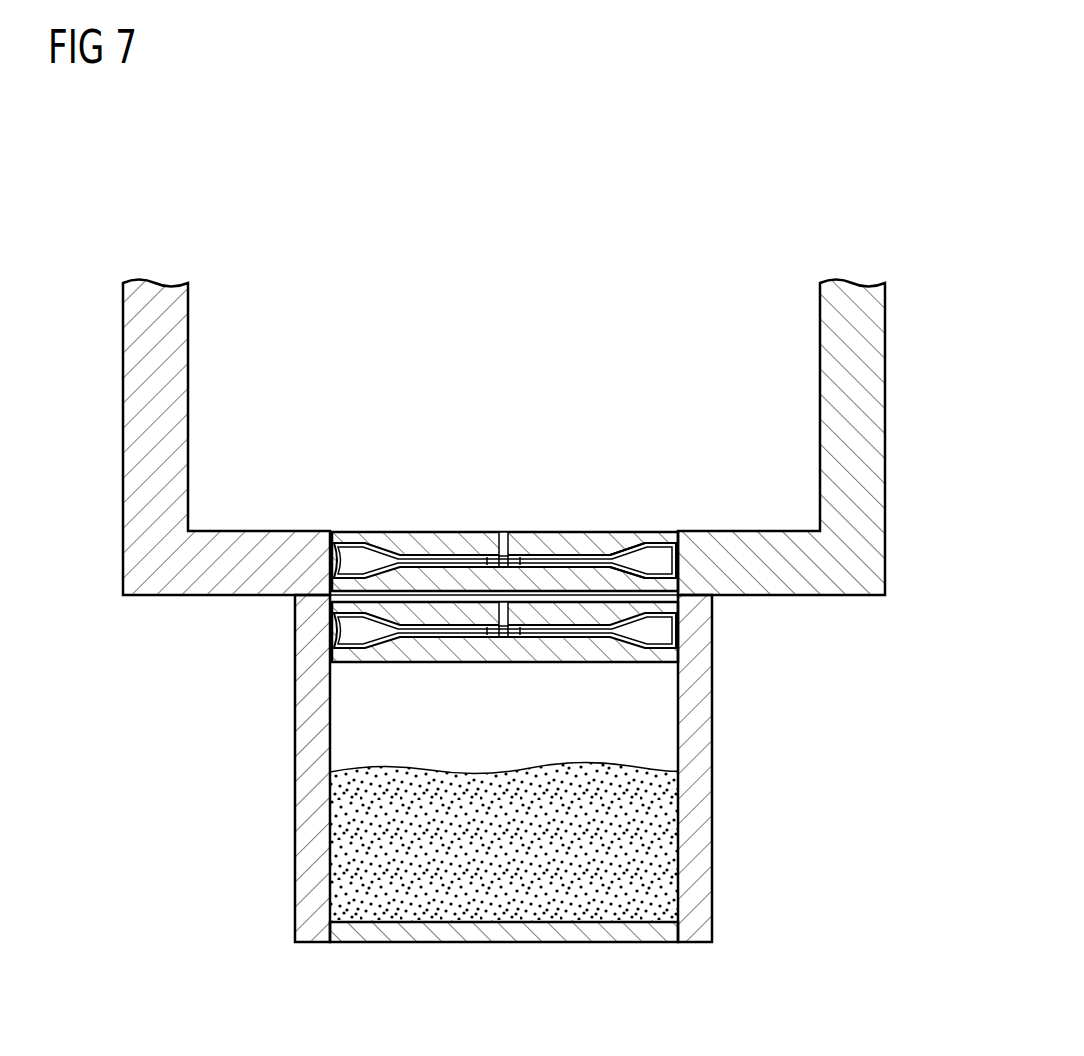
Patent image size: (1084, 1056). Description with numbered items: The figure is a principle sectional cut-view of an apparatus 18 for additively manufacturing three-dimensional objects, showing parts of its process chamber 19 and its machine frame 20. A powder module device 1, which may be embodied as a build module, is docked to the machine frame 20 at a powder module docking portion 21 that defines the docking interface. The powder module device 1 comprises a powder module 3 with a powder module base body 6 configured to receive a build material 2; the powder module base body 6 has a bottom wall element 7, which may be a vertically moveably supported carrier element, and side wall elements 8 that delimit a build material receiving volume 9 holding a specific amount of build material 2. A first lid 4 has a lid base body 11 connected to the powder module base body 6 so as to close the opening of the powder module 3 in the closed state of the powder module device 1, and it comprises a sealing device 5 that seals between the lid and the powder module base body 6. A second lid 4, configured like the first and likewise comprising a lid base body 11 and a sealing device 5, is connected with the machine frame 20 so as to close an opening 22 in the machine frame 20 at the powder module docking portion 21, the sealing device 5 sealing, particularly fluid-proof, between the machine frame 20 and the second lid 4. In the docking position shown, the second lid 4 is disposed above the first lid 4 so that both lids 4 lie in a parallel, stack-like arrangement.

The powder module device 1 is at (458, 716).
The build material 2 is at (660, 873).
The powder module 3 is at (458, 806).
The lid 4 is at (468, 598).
The sealing device 5 is at (527, 513).
The powder module base body 6 is at (458, 806).
The bottom wall element 7 is at (513, 930).
The side wall element 8 is at (320, 882).
The build material receiving volume 9 is at (660, 728).
The lid base body 11 is at (468, 598).
The apparatus 18 is at (96, 267).
The process chamber 19 is at (819, 395).
The machine frame 20 is at (870, 558).
The powder module docking portion 21 is at (730, 608).
The opening 22 is at (678, 505).